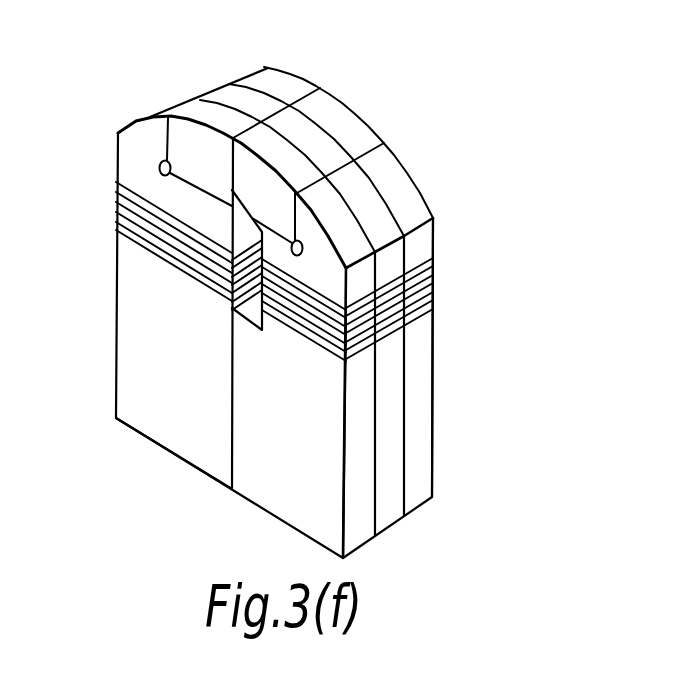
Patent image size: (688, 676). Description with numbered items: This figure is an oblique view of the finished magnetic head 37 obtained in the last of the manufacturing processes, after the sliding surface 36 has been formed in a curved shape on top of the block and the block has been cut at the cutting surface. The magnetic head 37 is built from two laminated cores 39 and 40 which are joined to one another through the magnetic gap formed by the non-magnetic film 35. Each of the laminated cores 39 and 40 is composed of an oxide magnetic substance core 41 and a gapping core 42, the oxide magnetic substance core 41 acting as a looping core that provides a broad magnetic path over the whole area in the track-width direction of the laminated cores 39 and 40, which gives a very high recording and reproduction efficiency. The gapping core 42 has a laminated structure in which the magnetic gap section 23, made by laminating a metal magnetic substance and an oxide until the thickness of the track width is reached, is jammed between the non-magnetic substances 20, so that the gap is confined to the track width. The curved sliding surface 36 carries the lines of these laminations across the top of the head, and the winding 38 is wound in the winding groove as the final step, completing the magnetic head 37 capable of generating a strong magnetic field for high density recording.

The non-magnetic substance 20 is at (305, 178).
The magnetic gap section 23 is at (306, 132).
The non-magnetic film 35 is at (279, 116).
The sliding surface 36 is at (409, 204).
The magnetic head 37 is at (226, 495).
The winding 38 is at (427, 300).
The laminated core 39 is at (440, 426).
The laminated core 40 is at (114, 208).
The oxide magnetic substance core 41 is at (330, 515).
The gapping core 42 is at (177, 137).